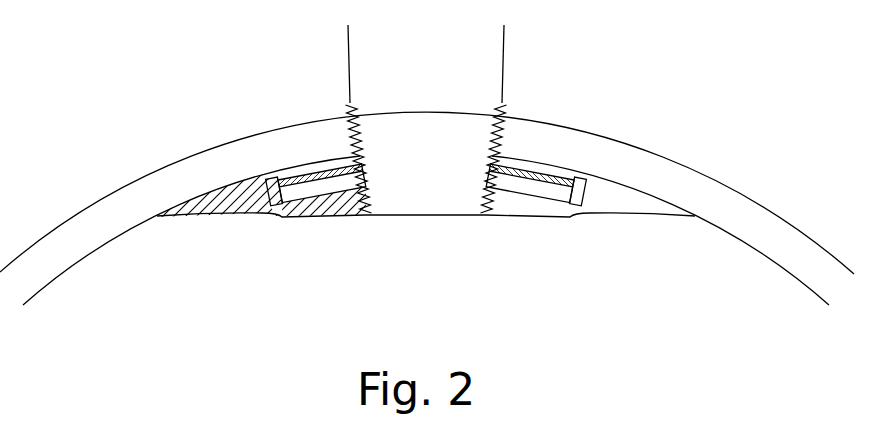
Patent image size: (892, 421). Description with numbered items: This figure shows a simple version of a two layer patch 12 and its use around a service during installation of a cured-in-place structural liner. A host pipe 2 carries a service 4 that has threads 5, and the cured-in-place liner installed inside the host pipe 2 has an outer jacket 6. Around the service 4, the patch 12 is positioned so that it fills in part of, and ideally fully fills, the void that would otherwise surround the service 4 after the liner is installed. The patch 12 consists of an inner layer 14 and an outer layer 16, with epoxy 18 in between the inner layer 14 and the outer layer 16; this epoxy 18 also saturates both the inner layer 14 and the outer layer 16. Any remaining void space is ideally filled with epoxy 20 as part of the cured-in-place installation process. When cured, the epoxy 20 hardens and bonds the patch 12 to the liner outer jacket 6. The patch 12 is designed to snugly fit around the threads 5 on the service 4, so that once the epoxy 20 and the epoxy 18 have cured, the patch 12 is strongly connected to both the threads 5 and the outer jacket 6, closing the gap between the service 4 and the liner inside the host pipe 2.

The host pipe 2 is at (717, 183).
The service 4 is at (500, 67).
The threads 5 is at (492, 140).
The outer jacket 6 is at (90, 253).
The patch 12 is at (444, 210).
The inner layer 14 is at (305, 193).
The outer layer 16 is at (267, 187).
The epoxy 18 is at (320, 182).
The epoxy 20 is at (218, 200).